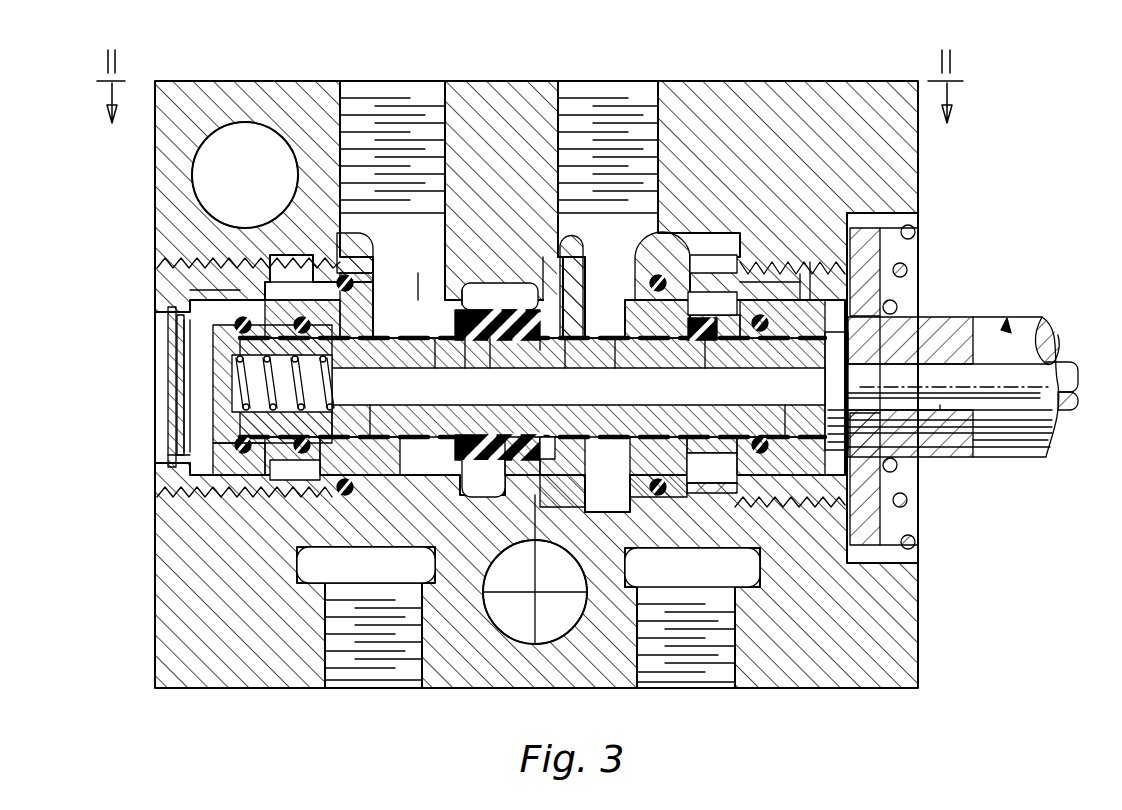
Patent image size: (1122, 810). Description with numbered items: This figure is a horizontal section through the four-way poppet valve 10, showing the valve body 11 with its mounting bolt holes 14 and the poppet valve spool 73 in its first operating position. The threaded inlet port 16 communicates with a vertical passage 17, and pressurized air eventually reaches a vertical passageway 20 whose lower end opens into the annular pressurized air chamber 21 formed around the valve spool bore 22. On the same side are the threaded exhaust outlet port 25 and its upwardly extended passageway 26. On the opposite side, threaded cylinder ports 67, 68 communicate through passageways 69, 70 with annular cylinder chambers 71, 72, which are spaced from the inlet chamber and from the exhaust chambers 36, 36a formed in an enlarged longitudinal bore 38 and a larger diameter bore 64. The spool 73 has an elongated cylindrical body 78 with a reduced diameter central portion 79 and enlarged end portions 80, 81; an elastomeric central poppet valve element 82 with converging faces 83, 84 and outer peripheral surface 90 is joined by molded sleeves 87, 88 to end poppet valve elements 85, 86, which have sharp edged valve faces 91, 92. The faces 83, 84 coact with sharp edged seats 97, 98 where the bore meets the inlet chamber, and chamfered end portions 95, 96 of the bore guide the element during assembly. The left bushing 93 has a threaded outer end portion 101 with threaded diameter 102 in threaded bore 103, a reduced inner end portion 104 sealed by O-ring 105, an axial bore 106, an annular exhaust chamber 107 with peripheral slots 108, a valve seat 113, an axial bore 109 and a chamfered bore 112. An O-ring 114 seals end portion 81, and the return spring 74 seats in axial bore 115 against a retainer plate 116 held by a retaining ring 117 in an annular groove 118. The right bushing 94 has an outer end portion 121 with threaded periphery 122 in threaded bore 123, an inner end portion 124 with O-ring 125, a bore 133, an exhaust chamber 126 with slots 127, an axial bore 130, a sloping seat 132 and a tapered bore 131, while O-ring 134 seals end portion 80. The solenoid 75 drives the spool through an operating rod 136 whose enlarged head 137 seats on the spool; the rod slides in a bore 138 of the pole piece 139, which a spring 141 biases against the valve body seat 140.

The four-way poppet valve 10 is at (530, 105).
The valve body 11 is at (170, 614).
The mounting bolt holes 14 is at (236, 125).
The inlet port 16 is at (415, 642).
The vertical passage 17 is at (470, 575).
The vertical passageway 20 is at (517, 592).
The pressurized air chamber 21 is at (472, 290).
The valve spool bore 22 is at (550, 300).
The exhaust outlet port 25 is at (723, 667).
The passageway 26 is at (750, 567).
The exhaust chamber 36 is at (284, 256).
The second annular exhaust chamber 36a is at (712, 255).
The enlarged longitudinal bore 38 is at (345, 255).
The larger diameter bore 64 is at (683, 258).
The cylinder port 67 is at (437, 115).
The cylinder port 68 is at (653, 118).
The passageway 69 is at (432, 218).
The passageway 70 is at (580, 240).
The cylinder chamber 71 is at (397, 505).
The cylinder chamber 72 is at (603, 512).
The poppet valve spool 73 is at (793, 345).
The return spring 74 is at (253, 390).
The solenoid 75 is at (1007, 318).
The cylindrical body 78 is at (520, 420).
The reduced diameter central portion 79 is at (490, 340).
The enlarged diameter end portion 80 is at (800, 447).
The enlarged diameter end portion 81 is at (260, 467).
The poppet valve element 82 is at (520, 312).
The poppet valve face 83 is at (468, 345).
The poppet valve face 84 is at (567, 337).
The end poppet valve element 85 is at (313, 315).
The end poppet valve element 86 is at (712, 345).
The elastomeric sleeve 87 is at (443, 345).
The elastomeric sleeve 88 is at (617, 340).
The peripheral surface 90 is at (545, 470).
The sharp edged valve face 91 is at (333, 323).
The sharp edged valve face 92 is at (683, 315).
The bushing 93 is at (158, 297).
The bushing 94 is at (770, 262).
The chamfered end portion 95 is at (457, 470).
The chamfered end portion 96 is at (568, 460).
The poppet valve seat 97 is at (488, 312).
The poppet valve seat 98 is at (540, 340).
The outer end portion 101 is at (165, 483).
The outer threaded diameter 102 is at (210, 522).
The threaded bore 103 is at (222, 512).
The inner end portion 104 is at (327, 487).
The O-ring seal 105 is at (385, 262).
The axial bore 106 is at (172, 298).
The annular exhaust chamber 107 is at (260, 298).
The peripheral slots 108 is at (293, 508).
The axial bore 109 is at (367, 427).
The chamfered bore 112 is at (370, 328).
The poppet valve seat 113 is at (332, 427).
The O-ring seal 114 is at (211, 275).
The axial bore 115 is at (226, 375).
The retainer plate 116 is at (177, 348).
The retaining ring 117 is at (166, 320).
The annular groove 118 is at (168, 458).
The outer end portion 121 is at (843, 278).
The threaded outer periphery 122 is at (800, 272).
The threaded bore 123 is at (797, 262).
The inner end portion 124 is at (690, 500).
The O-ring seal 125 is at (658, 497).
The annular exhaust chamber 126 is at (764, 318).
The peripheral slots 127 is at (735, 262).
The axial bore 130 is at (640, 312).
The tapered bore 131 is at (650, 328).
The poppet valve seat 132 is at (673, 448).
The bore 133 is at (790, 437).
The O-ring seal 134 is at (767, 457).
The operating rod 136 is at (1062, 378).
The enlarged head 137 is at (853, 353).
The bore 138 is at (937, 402).
The pole piece 139 is at (1030, 440).
The seat 140 is at (852, 525).
The spring 141 is at (910, 522).